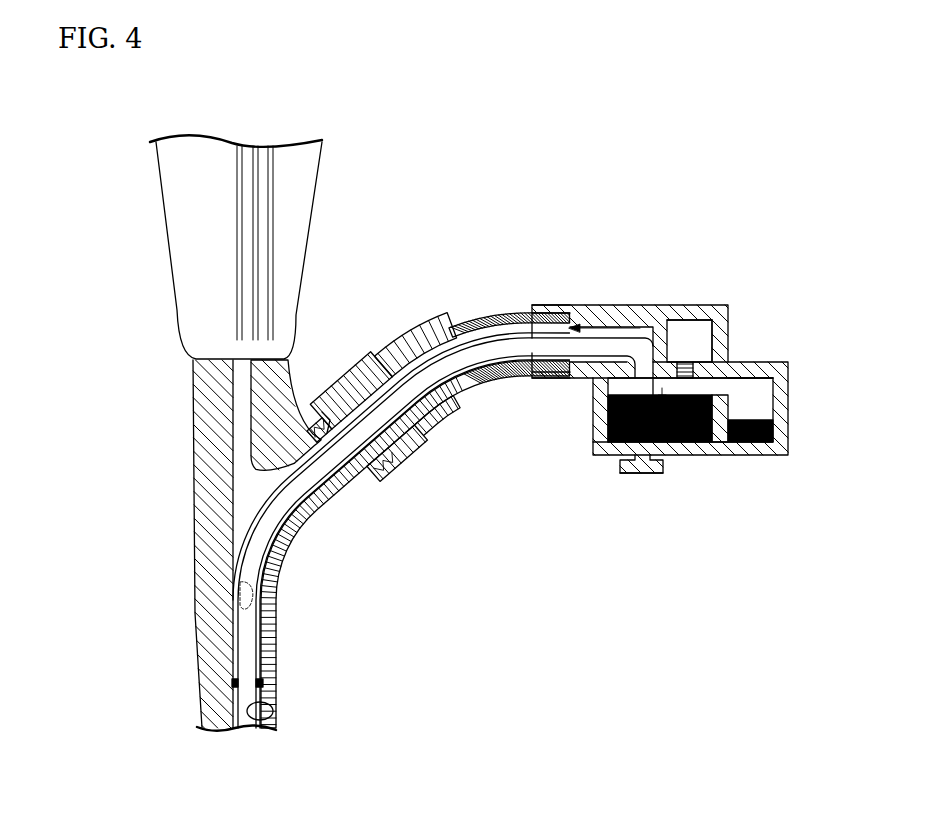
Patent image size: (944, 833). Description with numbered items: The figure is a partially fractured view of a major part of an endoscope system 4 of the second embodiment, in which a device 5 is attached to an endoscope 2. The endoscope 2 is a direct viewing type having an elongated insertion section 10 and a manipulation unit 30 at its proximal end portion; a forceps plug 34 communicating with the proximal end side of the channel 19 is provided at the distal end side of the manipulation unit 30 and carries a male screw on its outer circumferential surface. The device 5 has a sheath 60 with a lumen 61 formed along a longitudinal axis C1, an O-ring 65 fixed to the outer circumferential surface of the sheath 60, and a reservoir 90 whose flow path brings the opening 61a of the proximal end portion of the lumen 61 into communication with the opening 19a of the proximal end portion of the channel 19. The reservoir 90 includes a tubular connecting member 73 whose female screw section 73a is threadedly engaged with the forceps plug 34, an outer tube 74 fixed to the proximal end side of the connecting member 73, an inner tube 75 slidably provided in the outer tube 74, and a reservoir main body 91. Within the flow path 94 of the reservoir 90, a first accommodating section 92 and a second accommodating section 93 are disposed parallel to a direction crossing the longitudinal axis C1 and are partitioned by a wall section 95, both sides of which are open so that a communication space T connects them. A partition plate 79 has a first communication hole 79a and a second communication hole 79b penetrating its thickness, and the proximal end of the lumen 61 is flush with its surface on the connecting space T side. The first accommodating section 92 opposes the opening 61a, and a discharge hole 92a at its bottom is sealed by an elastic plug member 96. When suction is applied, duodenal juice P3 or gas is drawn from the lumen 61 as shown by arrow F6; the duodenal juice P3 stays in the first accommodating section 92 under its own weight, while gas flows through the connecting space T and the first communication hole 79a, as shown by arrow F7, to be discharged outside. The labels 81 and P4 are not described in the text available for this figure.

The endoscope 2 is at (156, 140).
The manipulation unit 30 is at (328, 146).
The insertion section 10 is at (290, 675).
The lumen 61 is at (230, 587).
The sheath 60 is at (257, 618).
The O-ring (sealing member) 65 is at (232, 683).
The channel 19 is at (275, 709).
The opening of the channel 19a is at (327, 433).
The forceps plug 34 is at (378, 466).
The reservoir 90 is at (597, 233).
The connecting member 73 is at (386, 355).
The female screw section 73a is at (340, 400).
The outer tube 74 is at (446, 318).
The inner tube 75 is at (505, 313).
The reservoir main body 91 is at (566, 305).
The endoscope system 4 is at (662, 188).
The device 5 is at (742, 233).
The partition plate 79 is at (638, 362).
The first communication hole 79a is at (686, 362).
The second communication hole 79b is at (660, 380).
The flow path 94 is at (724, 330).
The longitudinal axis C1 is at (668, 350).
The partition 81 is at (714, 345).
The communication space (connecting space) T is at (714, 388).
The arrow F7 is at (586, 322).
The first accommodating section 92 is at (666, 456).
The wall section 95 is at (719, 446).
The opening of the lumen 61a is at (708, 456).
The second accommodating section 93 is at (756, 458).
The duodenal juice P3 is at (776, 432).
The arrow F6 is at (636, 410).
The pressure point P4 is at (600, 450).
The plug member 96 is at (628, 474).
The discharge hole 92a is at (651, 476).